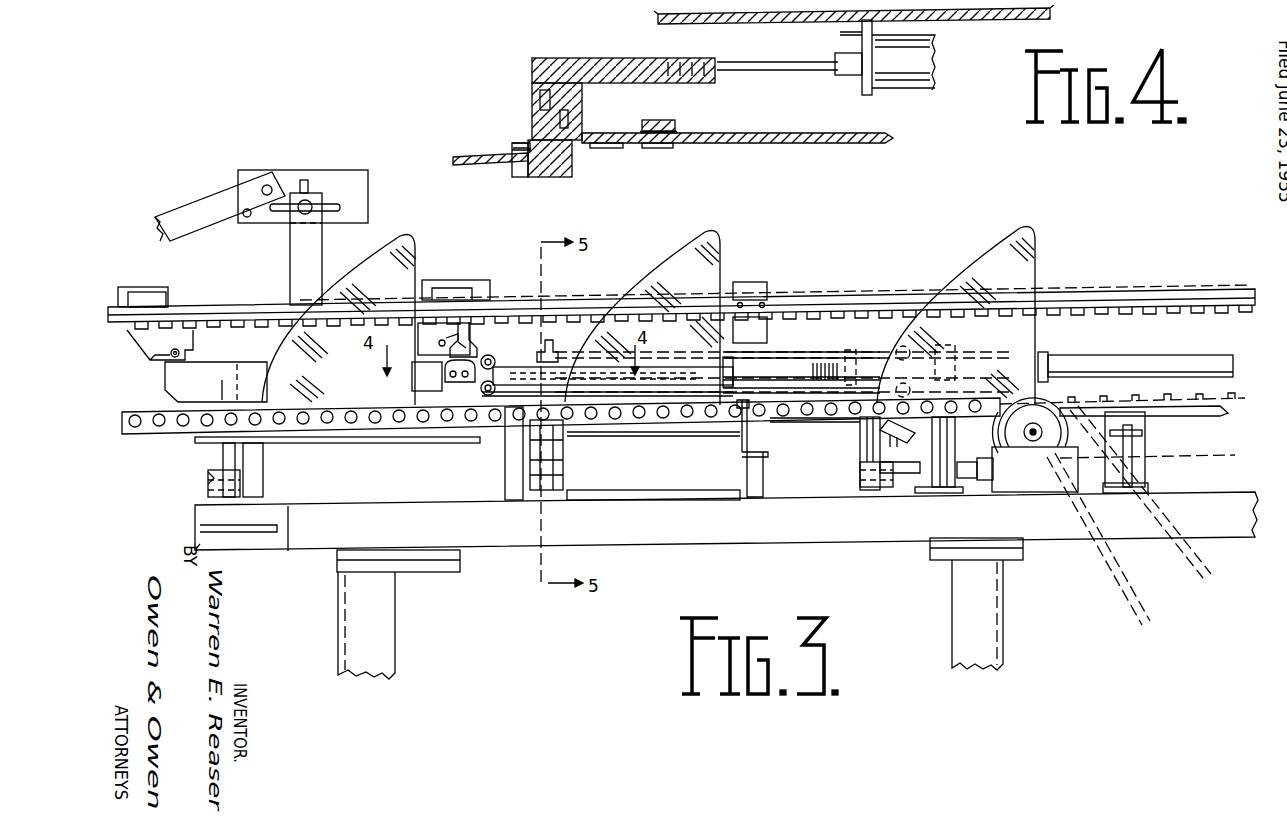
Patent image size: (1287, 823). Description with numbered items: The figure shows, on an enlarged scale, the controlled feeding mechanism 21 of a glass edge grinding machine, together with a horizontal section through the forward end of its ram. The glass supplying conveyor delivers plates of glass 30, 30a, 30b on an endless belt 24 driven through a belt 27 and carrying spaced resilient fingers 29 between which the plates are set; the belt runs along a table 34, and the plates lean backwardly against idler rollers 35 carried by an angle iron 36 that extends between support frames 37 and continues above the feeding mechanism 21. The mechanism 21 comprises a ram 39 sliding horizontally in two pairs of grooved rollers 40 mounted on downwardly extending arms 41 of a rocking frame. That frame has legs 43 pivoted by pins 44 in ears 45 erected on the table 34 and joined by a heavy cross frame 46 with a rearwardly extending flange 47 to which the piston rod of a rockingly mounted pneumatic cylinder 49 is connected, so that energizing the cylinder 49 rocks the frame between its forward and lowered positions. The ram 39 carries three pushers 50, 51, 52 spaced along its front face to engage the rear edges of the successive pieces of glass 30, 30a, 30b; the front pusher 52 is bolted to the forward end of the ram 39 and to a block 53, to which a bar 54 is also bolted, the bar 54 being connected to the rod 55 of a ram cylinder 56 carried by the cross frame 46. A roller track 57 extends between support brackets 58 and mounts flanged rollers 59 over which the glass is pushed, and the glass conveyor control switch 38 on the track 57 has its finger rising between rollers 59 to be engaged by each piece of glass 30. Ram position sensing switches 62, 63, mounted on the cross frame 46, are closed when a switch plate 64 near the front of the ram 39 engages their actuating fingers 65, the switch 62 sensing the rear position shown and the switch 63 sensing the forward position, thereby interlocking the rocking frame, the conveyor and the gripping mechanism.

In FIG. 3, the controlled feeding mechanism 21 is at (933, 262).
In FIG. 3, the endless belt 24 is at (1176, 417).
In FIG. 3, the belt 27 is at (1107, 571).
In FIG. 3, the resilient fingers 29 is at (1235, 398).
In FIG. 3, the plate of glass 30 is at (1037, 268).
In FIG. 3, the plate of glass 30a is at (722, 252).
In FIG. 4, the plate of glass 30b is at (496, 150).
In FIG. 3, the plate of glass 30b is at (415, 252).
In FIG. 3, the table 34 is at (680, 492).
In FIG. 3, the idler rollers 35 is at (577, 312).
In FIG. 3, the angle iron 36 is at (821, 355).
In FIG. 3, the support frames 37 is at (768, 340).
In FIG. 3, the glass conveyor control switch 38 is at (862, 440).
In FIG. 4, the ram 39 is at (797, 118).
In FIG. 3, the ram 39 is at (1125, 356).
In FIG. 4, the grooved rollers 40 is at (673, 148).
In FIG. 3, the grooved rollers 40 is at (495, 359).
In FIG. 4, the downwardly extending arms 41 is at (677, 124).
In FIG. 3, the legs 43 is at (222, 385).
In FIG. 3, the pin 44 is at (206, 470).
In FIG. 3, the ears 45 is at (206, 492).
In FIG. 4, the cross frame 46 is at (706, 26).
In FIG. 3, the cross frame 46 is at (813, 350).
In FIG. 3, the flange 47 is at (555, 350).
In FIG. 3, the pneumatic cylinder 49 is at (563, 449).
In FIG. 3, the pusher 50 is at (1049, 355).
In FIG. 3, the pusher 51 is at (743, 407).
In FIG. 4, the front pusher 52 is at (556, 177).
In FIG. 3, the front pusher 52 is at (422, 398).
In FIG. 4, the block 53 is at (583, 109).
In FIG. 4, the bar 54 is at (603, 59).
In FIG. 4, the rod 55 is at (754, 62).
In FIG. 4, the ram cylinder 56 is at (914, 91).
In FIG. 3, the ram cylinder 56 is at (850, 345).
In FIG. 3, the roller track 57 is at (625, 427).
In FIG. 3, the support brackets 58 is at (506, 464).
In FIG. 3, the flanged rollers 59 is at (830, 426).
In FIG. 3, the ram position sensing switch 62 is at (468, 333).
In FIG. 3, the ram position sensing switch 63 is at (191, 314).
In FIG. 4, the switch plate 64 is at (606, 149).
In FIG. 3, the switch plate 64 is at (476, 353).
In FIG. 3, the actuating finger 65 is at (182, 352).